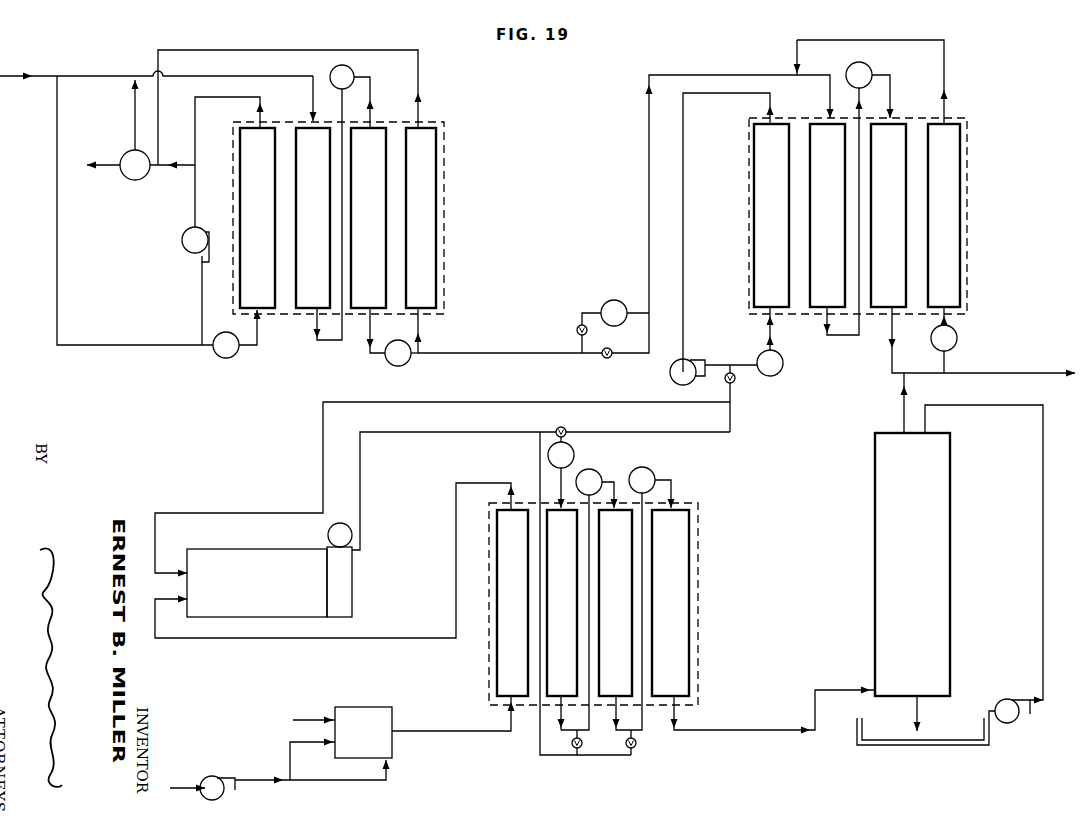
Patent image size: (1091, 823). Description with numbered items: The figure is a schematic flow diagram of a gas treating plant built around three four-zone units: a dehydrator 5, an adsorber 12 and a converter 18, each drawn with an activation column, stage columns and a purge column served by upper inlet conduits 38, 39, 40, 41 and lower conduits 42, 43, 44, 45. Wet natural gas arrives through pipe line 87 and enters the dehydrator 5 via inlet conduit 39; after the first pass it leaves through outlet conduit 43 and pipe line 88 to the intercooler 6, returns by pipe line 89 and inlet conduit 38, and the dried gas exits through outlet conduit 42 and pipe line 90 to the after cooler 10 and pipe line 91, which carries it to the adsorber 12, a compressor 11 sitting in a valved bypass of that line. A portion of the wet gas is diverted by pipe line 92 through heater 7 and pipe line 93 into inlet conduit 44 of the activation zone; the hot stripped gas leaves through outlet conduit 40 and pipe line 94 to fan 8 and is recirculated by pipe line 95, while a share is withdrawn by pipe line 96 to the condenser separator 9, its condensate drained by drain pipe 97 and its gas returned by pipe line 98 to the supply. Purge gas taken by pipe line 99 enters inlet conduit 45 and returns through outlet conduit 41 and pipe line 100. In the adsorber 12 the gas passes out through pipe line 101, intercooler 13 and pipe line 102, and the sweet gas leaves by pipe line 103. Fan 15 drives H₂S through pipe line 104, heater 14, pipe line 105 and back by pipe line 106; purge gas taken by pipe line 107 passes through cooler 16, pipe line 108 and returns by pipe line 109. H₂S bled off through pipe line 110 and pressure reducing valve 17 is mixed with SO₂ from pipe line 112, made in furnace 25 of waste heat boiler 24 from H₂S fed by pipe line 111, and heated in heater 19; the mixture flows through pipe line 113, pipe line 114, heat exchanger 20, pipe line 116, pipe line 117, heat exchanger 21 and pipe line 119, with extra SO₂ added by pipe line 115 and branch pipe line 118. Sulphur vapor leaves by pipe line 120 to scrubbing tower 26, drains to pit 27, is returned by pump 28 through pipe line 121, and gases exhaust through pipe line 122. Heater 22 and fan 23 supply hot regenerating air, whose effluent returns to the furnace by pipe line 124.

The four-zone dehydrator 5 is at (444, 172).
The intercooler 6 is at (352, 70).
The heater 7 is at (214, 356).
The fan 8 is at (190, 252).
The condenser separator 9 is at (123, 157).
The after cooler 10 is at (396, 366).
The compressor 11 is at (601, 307).
The four zone adsorber 12 is at (968, 180).
The intercooler 13 is at (866, 67).
The heater 14 is at (758, 356).
The fan or blower 15 is at (690, 356).
The cooler 16 is at (958, 338).
The pressure reducing valve 17 is at (735, 388).
The four zone converter 18 is at (699, 613).
The heater 19 is at (572, 450).
The heat exchanger 20 is at (600, 478).
The second heat exchanger 21 is at (655, 476).
The heater 22 is at (366, 708).
The fan or blower 23 is at (215, 778).
The waste heat boiler 24 is at (346, 536).
The furnace 25 is at (300, 546).
The scrubbing tower 26 is at (951, 550).
The pit 27 is at (857, 740).
The pump 28 is at (1018, 722).
The inlet conduit 38 is at (371, 113).
The inlet conduit 39 is at (312, 108).
The outlet conduit 40 is at (258, 113).
The outlet conduit 41 is at (420, 107).
The outlet conduit 42 is at (371, 331).
The outlet conduit 43 is at (316, 336).
The inlet conduit 44 is at (258, 346).
The inlet conduit 45 is at (420, 322).
The pipe line 87 is at (74, 76).
The pipe line 88 is at (343, 341).
The pipe line 89 is at (371, 79).
The pipe line 90 is at (386, 358).
The pipe line 91 is at (494, 353).
The pipe line 92 is at (58, 280).
The pipe line 93 is at (240, 350).
The pipe line 94 is at (214, 101).
The pipe line 95 is at (202, 309).
The pipe line 96 is at (185, 170).
The drain pipe 97 is at (110, 174).
The pipe line 98 is at (134, 113).
The pipe line 99 is at (420, 342).
The pipe line 100 is at (304, 54).
The pipe line 101 is at (852, 340).
The pipe line 102 is at (880, 75).
The pipe line 103 is at (905, 378).
The pipe line 104 is at (714, 385).
The pipe line 105 is at (784, 352).
The pipe line 106 is at (683, 190).
The pipe line 107 is at (946, 364).
The pipe line 108 is at (932, 338).
The pipe line 109 is at (945, 66).
The pipe line 110 is at (738, 400).
The pipe line 111 is at (548, 402).
The pipe line 112 is at (408, 436).
The pipe line 113 is at (570, 476).
The pipe line 114 is at (585, 735).
The pipe line 115 is at (541, 757).
The pipe line 116 is at (624, 470).
The pipe line 117 is at (642, 736).
The branch pipe line 118 is at (616, 757).
The pipe line 119 is at (672, 482).
The pipe line 120 is at (748, 730).
The pipe line 121 is at (1044, 577).
The exhaust pipe line 122 is at (903, 425).
The pipe line 124 is at (396, 638).